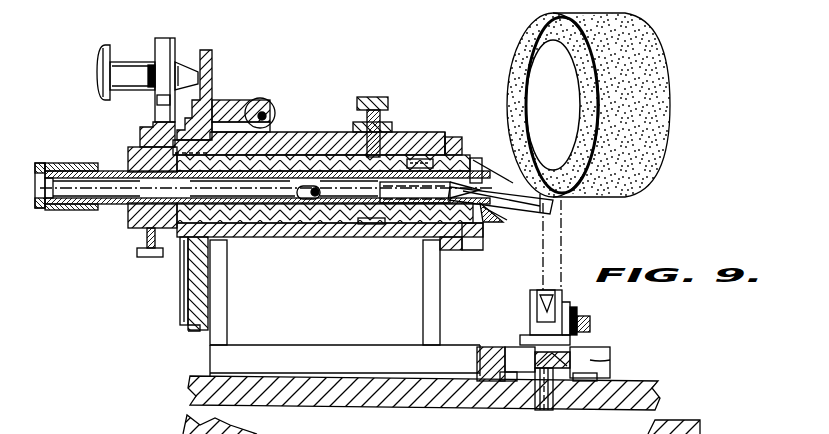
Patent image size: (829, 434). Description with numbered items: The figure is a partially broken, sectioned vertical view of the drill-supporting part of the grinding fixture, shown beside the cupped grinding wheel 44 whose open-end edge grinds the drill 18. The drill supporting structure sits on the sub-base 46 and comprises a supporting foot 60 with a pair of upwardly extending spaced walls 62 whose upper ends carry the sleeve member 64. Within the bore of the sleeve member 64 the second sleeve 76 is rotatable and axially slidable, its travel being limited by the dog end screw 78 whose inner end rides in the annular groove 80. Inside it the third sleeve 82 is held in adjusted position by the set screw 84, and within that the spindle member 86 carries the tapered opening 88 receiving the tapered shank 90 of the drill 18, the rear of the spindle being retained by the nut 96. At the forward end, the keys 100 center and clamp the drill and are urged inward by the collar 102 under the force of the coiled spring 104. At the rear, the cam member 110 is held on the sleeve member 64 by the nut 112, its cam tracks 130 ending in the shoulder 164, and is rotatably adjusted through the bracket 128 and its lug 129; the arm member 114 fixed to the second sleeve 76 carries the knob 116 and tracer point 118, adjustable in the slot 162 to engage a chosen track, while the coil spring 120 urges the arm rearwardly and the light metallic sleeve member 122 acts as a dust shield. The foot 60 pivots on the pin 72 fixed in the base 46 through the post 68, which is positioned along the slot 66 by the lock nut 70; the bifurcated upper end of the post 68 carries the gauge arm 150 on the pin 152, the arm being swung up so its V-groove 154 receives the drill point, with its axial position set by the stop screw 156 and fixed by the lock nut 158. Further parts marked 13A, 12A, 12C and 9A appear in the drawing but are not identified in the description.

The operating handle or knob 116 is at (96, 72).
The tracer point 118 is at (183, 45).
The slot 162 is at (165, 100).
The light metallic sleeve member 122 is at (155, 130).
The arm member 114 is at (140, 148).
The cam member 110 is at (213, 68).
The bracket 128 is at (240, 99).
The plate 13A is at (290, 112).
The lug 129 is at (272, 100).
The sleeve member 64 is at (310, 132).
The plate end 12A is at (442, 132).
The collar 102 is at (458, 137).
The coiled spring 104 is at (415, 158).
The dog end screw 78 is at (378, 96).
The keys 100 is at (478, 158).
The annular groove 80 is at (362, 225).
The spindle member 86 is at (267, 187).
The coil spring 120 is at (267, 188).
The tapered shank 90 is at (373, 190).
The second sleeve 76 is at (292, 239).
The tapered opening 88 is at (372, 226).
The block 12C is at (450, 252).
The nut 96 is at (40, 210).
The flange 9A is at (66, 212).
The third sleeve 82 is at (116, 214).
The set screw 84 is at (160, 258).
The nut 112 is at (180, 283).
The cam tracks 130 is at (188, 312).
The shoulder 164 is at (193, 332).
The spaced walls 62 is at (232, 290).
The supporting foot 60 is at (319, 345).
The base 46 is at (400, 405).
The drill 18 is at (531, 233).
The grinding wheel 44 is at (525, 48).
The gauge arm 150 is at (550, 296).
The V-groove 154 is at (530, 309).
The pin 152 is at (530, 294).
The lock nut 70 is at (520, 345).
The lock nut 158 is at (580, 312).
The stop screw 156 is at (592, 322).
The slot 66 is at (610, 357).
The post 68 is at (610, 368).
The pin 72 is at (545, 412).